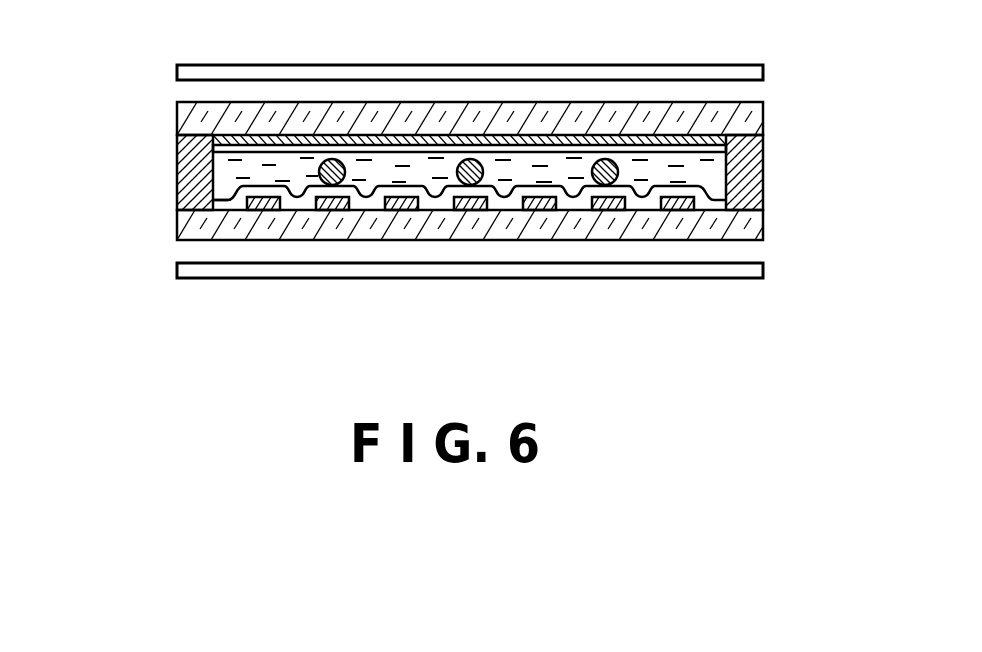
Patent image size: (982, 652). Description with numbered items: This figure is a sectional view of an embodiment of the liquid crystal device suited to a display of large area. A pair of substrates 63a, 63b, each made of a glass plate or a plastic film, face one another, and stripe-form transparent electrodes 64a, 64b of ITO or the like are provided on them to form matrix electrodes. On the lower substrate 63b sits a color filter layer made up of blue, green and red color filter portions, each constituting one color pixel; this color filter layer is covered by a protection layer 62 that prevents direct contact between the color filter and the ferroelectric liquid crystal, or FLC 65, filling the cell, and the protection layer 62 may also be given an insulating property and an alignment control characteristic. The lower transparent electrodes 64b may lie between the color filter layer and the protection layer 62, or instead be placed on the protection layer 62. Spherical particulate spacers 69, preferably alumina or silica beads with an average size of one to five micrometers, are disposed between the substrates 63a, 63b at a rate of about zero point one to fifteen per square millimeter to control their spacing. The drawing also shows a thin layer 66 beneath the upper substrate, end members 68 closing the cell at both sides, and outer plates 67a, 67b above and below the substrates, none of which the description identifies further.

The protection layer 62 is at (238, 203).
The substrate 63a is at (763, 113).
The substrate 63b is at (763, 222).
The transparent electrode 64a is at (728, 140).
The transparent electrode 64b is at (690, 182).
The FLC 65 is at (289, 170).
The color filter layer 66 is at (232, 152).
The upper polarizer plate 67a is at (176, 71).
The lower polarizer plate 67b is at (176, 268).
The sealing member 68 is at (176, 184).
The particulate spacers 69 is at (606, 158).